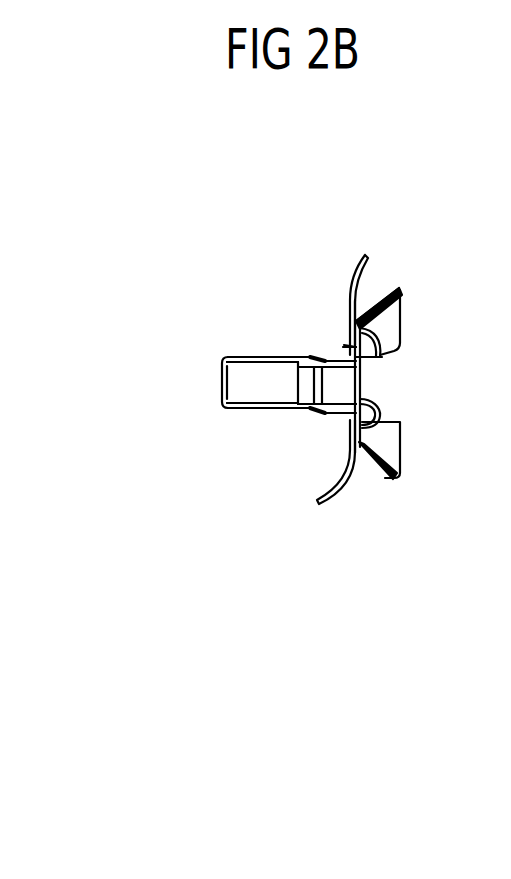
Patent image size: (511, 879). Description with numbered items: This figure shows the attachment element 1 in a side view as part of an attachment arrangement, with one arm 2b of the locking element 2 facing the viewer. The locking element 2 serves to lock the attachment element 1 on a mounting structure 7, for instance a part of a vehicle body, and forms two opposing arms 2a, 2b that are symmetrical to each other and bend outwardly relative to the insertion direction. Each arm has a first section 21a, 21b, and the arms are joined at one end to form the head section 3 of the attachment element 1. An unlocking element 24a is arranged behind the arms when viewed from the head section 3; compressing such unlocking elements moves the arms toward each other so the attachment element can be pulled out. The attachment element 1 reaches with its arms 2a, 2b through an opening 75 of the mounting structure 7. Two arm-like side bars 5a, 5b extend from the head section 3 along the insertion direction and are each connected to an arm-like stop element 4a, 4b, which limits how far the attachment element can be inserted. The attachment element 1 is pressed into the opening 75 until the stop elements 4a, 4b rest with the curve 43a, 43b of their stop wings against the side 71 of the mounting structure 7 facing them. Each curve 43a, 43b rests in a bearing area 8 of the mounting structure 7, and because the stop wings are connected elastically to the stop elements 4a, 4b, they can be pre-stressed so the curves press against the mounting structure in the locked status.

The attachment element 1 is at (310, 376).
The locking element 2 is at (246, 387).
The head section 3 is at (219, 376).
The arm 2a is at (282, 365).
The arm 2b is at (291, 453).
The side bar 5a is at (288, 353).
The side bar 5b is at (293, 415).
The first section 21a is at (247, 387).
The first section 21b is at (307, 395).
The unlocking element 24a is at (363, 388).
The opening 75 is at (344, 345).
The mounting structure 7 is at (369, 259).
The side 71 is at (358, 315).
The curve 43a is at (375, 322).
The curve 43b is at (361, 448).
The stop element 4a is at (419, 297).
The stop element 4b is at (414, 481).
The bearing area 8 is at (362, 348).